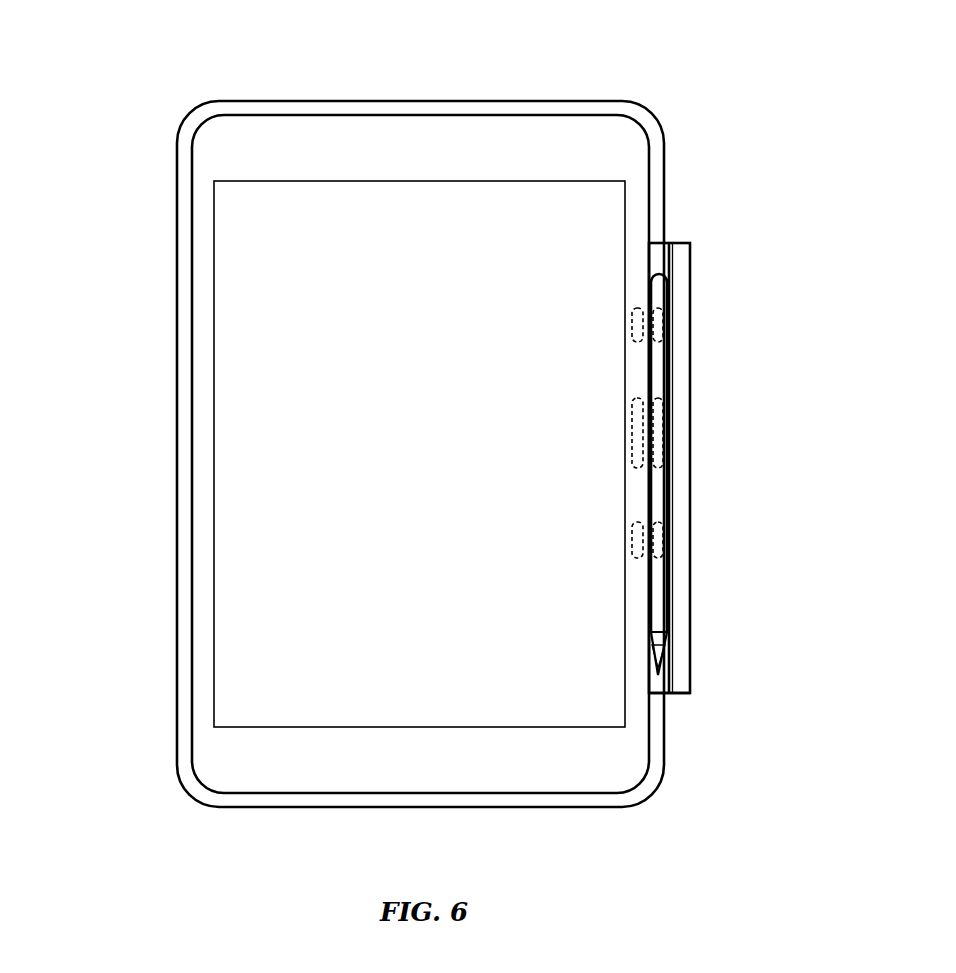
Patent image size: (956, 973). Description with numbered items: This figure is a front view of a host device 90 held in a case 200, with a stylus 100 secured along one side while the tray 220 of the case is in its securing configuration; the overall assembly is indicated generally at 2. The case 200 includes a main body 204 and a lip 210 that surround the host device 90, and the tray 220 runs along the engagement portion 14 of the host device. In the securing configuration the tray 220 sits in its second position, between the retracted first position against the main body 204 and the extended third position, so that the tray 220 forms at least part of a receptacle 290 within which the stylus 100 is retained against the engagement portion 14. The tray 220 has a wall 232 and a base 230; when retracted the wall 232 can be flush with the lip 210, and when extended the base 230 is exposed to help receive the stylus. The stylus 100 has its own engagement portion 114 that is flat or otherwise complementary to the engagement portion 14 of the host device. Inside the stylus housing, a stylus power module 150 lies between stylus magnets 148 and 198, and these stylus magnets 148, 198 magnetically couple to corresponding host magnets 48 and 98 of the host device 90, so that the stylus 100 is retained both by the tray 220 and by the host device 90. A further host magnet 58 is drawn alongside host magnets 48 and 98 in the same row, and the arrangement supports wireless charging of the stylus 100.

The system 2 is at (152, 22).
The case 200 is at (177, 243).
The main body 204 is at (272, 109).
The lip 210 is at (496, 109).
The host device 90 is at (615, 124).
The tray 220 is at (690, 260).
The receptacle 290 is at (668, 240).
The stylus 100 is at (690, 298).
The engagement portion 14 is at (653, 268).
The engagement portion 114 is at (650, 580).
The wall 232 is at (683, 670).
The base 230 is at (667, 693).
The host magnet 98 is at (632, 336).
The device magnet 58 is at (632, 432).
The host magnet 48 is at (632, 538).
The stylus magnet 198 is at (664, 339).
The stylus power module 150 is at (664, 441).
The stylus magnet 148 is at (664, 540).